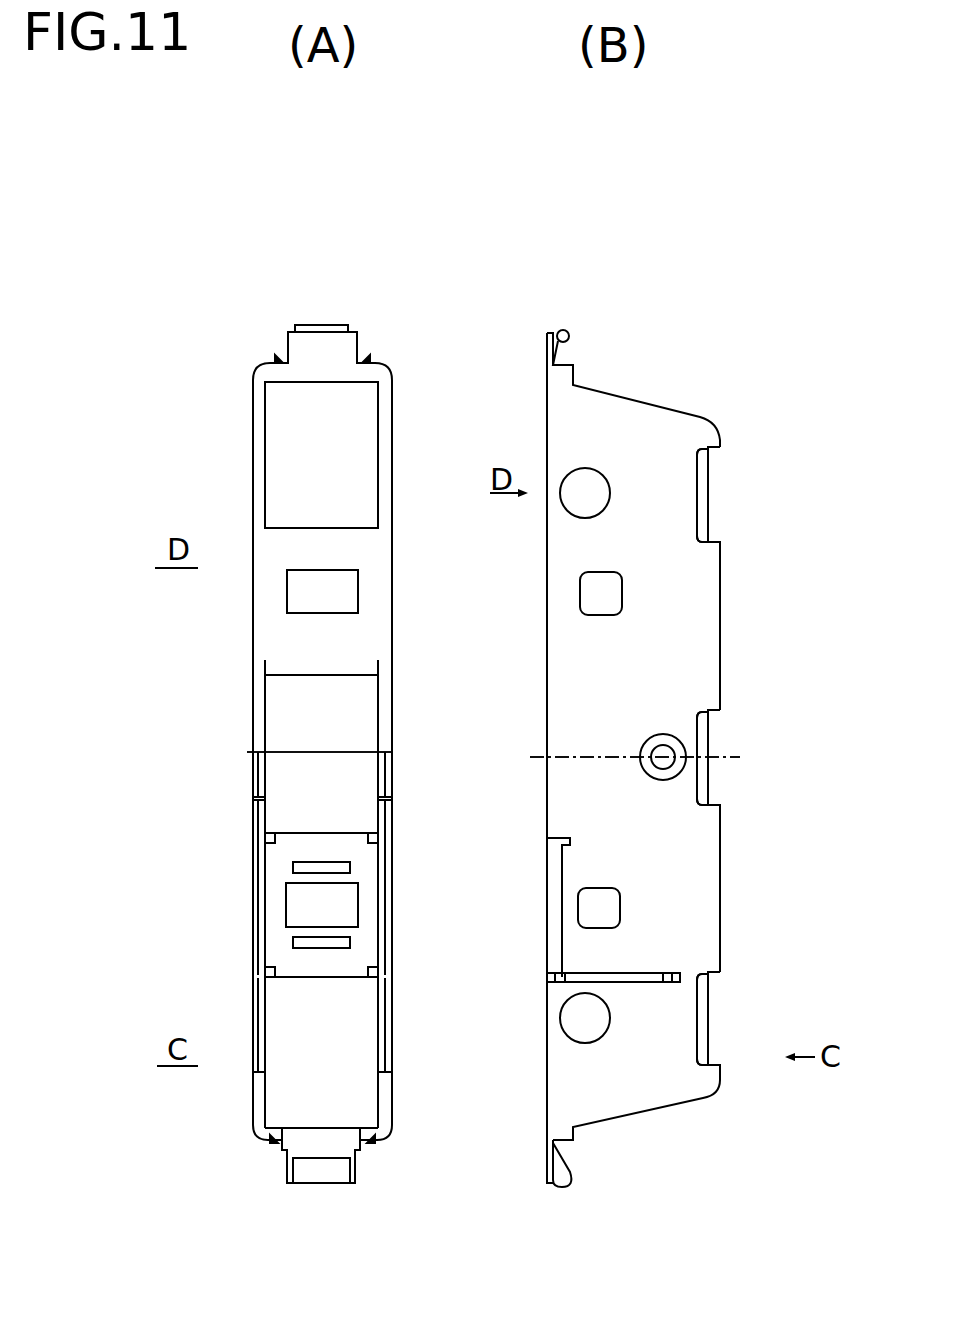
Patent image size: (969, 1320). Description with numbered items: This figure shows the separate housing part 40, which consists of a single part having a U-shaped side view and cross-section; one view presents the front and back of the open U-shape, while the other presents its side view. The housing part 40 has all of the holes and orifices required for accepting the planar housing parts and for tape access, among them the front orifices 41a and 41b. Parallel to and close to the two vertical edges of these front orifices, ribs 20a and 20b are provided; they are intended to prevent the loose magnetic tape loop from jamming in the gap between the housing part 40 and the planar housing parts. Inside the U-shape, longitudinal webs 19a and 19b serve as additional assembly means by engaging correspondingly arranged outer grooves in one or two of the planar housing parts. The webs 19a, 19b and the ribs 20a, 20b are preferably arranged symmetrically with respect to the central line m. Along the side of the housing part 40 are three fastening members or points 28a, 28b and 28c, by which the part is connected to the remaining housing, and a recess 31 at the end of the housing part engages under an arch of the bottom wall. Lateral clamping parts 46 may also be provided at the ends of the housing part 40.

The lateral clamping part 46 is at (327, 346).
The housing part 40 is at (393, 378).
The front orifice 41b is at (343, 590).
The front orifice 41a is at (300, 913).
The rib 20a is at (562, 940).
The rib 20b is at (562, 872).
The longitudinal web 19a is at (494, 965).
The longitudinal web 19b is at (494, 965).
The fastening member 28a is at (707, 487).
The fastening member 28b is at (716, 745).
The fastening member 28c is at (709, 1043).
The recess 31 is at (703, 986).
The central line m is at (367, 752).